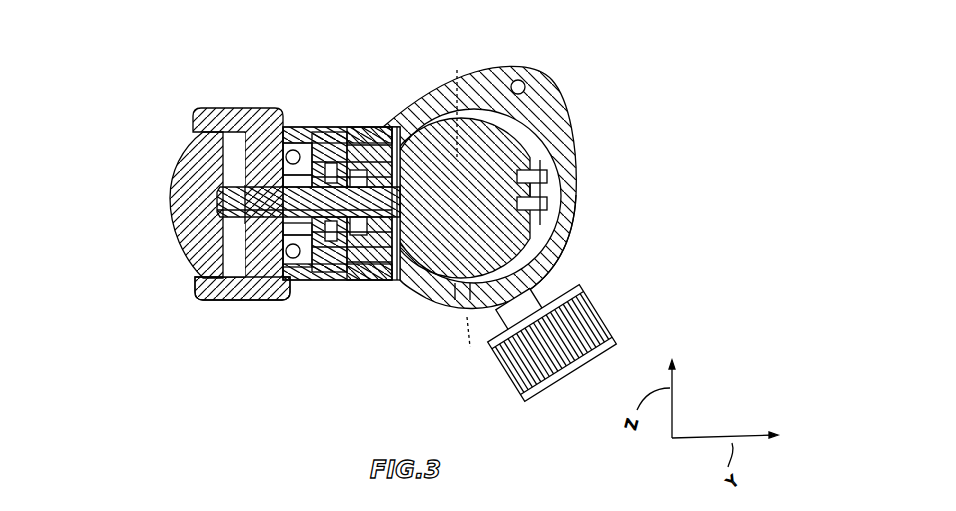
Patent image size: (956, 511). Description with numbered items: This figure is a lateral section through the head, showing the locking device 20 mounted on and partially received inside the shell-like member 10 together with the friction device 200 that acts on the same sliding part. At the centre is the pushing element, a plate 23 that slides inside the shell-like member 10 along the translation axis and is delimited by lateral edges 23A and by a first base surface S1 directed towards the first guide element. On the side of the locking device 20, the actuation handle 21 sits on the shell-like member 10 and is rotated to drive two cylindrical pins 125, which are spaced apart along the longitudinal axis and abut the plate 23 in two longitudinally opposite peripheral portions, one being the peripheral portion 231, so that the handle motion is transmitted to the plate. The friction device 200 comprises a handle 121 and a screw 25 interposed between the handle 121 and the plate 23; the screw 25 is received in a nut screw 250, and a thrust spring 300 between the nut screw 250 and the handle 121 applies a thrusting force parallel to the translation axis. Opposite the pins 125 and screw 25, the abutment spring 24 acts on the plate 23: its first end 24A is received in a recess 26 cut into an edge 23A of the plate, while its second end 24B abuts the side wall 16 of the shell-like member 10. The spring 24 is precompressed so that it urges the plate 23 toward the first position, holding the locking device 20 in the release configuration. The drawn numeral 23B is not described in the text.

The shell-like member 10 is at (567, 240).
The side wall 16 is at (560, 152).
The locking device 20 is at (180, 100).
The actuation handle 21 is at (240, 307).
The pushing element 23 is at (405, 282).
The lateral edges 23A is at (450, 322).
The ball socket portion 23B is at (378, 280).
The peripheral portion 231 is at (408, 122).
The abutment spring 24 is at (548, 200).
The first end of the spring 24A is at (560, 250).
The second end of the spring 24B is at (548, 185).
The screw 25 is at (317, 126).
The recess 26 is at (562, 112).
The handle 121 is at (172, 231).
The cylindrical pins 125 is at (375, 130).
The friction device 200 is at (160, 326).
The nut screw 250 is at (325, 285).
The thrust spring 300 is at (248, 108).
The first base surface S1 is at (452, 116).